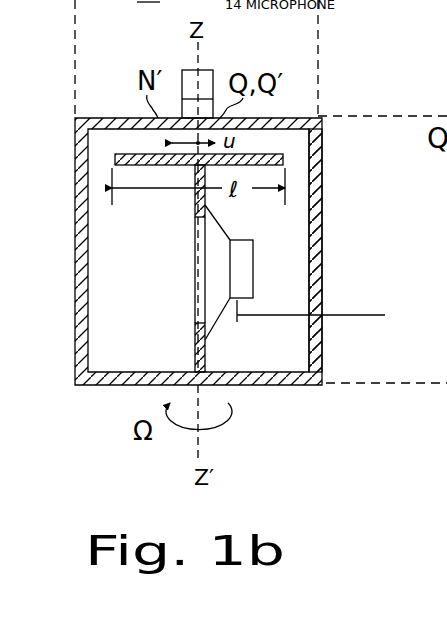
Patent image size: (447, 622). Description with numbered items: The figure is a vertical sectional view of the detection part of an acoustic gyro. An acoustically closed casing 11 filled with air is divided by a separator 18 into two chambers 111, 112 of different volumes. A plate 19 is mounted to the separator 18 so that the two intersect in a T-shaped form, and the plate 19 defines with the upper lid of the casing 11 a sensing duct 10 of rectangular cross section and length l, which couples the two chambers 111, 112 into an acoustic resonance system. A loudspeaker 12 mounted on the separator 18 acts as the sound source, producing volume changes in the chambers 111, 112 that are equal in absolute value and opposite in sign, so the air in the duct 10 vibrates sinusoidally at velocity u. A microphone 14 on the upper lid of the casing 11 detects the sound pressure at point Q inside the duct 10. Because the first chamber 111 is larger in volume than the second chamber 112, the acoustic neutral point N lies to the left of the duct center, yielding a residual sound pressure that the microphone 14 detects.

The sensing duct 10 is at (215, 225).
The casing 11 is at (318, 118).
The loudspeaker 12 is at (228, 229).
The microphone 14 is at (211, 66).
The separator 18 is at (208, 353).
The plate 19 is at (155, 166).
The chamber 111 is at (141, 268).
The chamber 112 is at (258, 268).